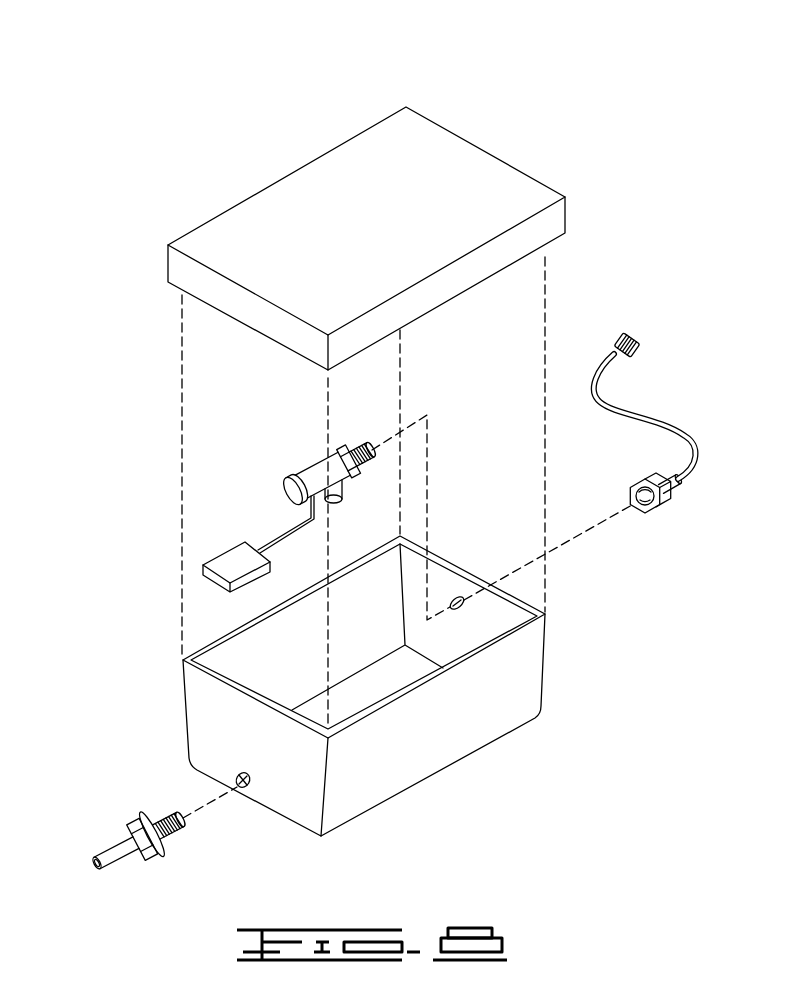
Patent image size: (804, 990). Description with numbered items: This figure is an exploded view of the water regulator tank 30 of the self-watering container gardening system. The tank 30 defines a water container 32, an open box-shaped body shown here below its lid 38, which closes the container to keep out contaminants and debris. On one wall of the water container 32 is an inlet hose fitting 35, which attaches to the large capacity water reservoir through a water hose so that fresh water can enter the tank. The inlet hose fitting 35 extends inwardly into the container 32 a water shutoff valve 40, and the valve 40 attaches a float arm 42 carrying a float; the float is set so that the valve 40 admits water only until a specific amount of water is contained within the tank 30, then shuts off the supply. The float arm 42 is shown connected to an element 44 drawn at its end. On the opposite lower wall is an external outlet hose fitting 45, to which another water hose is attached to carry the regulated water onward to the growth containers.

The water regulator tank 30 is at (153, 60).
The water container 32 is at (463, 755).
The inlet hose fitting 35 is at (667, 505).
The lid 38 is at (495, 153).
The water shutoff valve 40 is at (318, 462).
The float arm 42 is at (272, 540).
The electronics module 44 is at (215, 586).
The external outlet hose fitting 45 is at (130, 815).